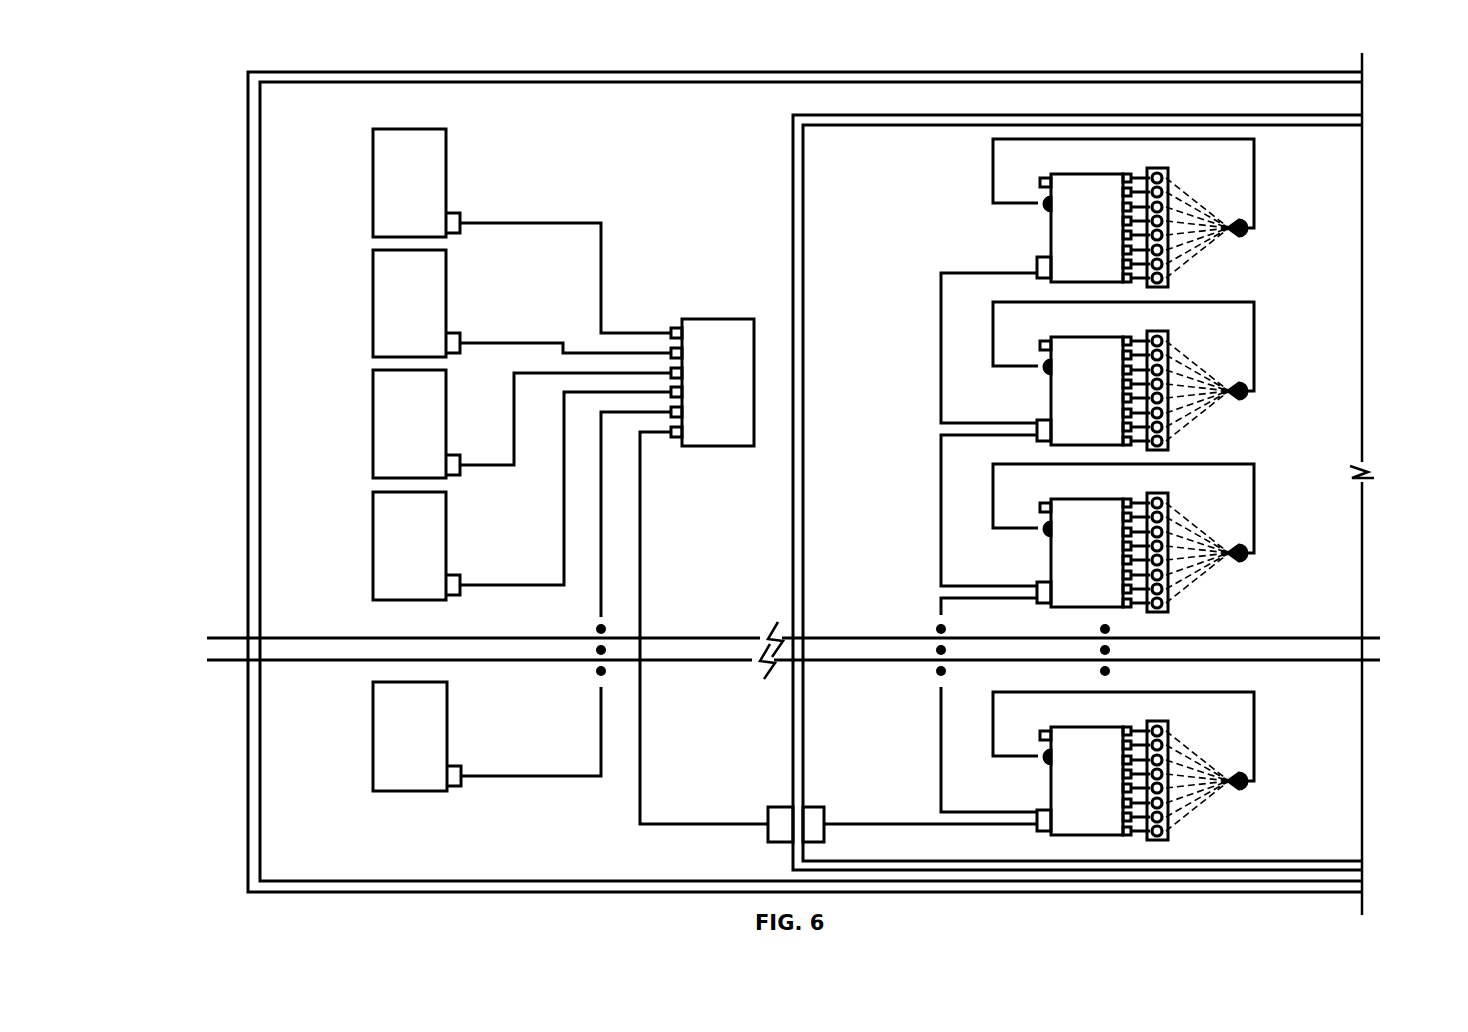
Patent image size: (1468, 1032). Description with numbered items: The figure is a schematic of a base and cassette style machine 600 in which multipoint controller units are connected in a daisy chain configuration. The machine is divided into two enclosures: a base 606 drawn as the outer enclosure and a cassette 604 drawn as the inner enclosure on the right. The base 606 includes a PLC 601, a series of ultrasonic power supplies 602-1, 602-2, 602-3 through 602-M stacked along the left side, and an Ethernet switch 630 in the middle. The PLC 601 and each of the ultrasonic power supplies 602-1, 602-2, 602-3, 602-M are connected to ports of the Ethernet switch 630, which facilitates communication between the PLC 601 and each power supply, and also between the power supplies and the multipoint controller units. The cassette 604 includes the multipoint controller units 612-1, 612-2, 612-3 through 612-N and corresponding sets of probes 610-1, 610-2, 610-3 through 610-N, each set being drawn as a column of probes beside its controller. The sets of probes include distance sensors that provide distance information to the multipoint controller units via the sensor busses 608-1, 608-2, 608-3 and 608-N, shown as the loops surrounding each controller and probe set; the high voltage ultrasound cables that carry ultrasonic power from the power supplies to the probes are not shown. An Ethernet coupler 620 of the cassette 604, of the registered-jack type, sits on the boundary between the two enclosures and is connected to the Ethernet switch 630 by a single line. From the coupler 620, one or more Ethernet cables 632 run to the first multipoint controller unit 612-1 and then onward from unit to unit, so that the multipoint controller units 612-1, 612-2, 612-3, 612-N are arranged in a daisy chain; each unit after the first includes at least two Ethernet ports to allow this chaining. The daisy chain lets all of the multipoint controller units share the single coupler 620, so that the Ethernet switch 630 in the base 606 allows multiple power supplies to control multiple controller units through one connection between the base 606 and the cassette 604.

The base and cassette style machine 600 is at (210, 58).
The PLC 601 is at (373, 138).
The ultrasonic power supply 602-1 is at (373, 258).
The ultrasonic power supply 602-2 is at (373, 380).
The ultrasonic power supply 602-3 is at (373, 500).
The ultrasonic power supply 602-M is at (373, 692).
The cassette 604 is at (1337, 115).
The base 606 is at (1337, 72).
The sensor bus 608-1 is at (1254, 178).
The sensor bus 608-2 is at (1172, 346).
The sensor bus 608-3 is at (1172, 508).
The sensor bus 608-N is at (1173, 736).
The set of probes 610-1 is at (1163, 168).
The set of probes 610-2 is at (1197, 378).
The set of probes 610-3 is at (1197, 540).
The set of probes 610-N is at (1197, 768).
The multipoint controller unit 612-1 is at (1083, 174).
The multipoint controller unit 612-2 is at (1079, 377).
The multipoint controller unit 612-3 is at (1079, 539).
The multipoint controller unit 612-N is at (1079, 767).
The RJ-45 coupler 620 is at (779, 801).
The Ethernet switch 630 is at (693, 319).
The Ethernet cable 632 is at (941, 389).